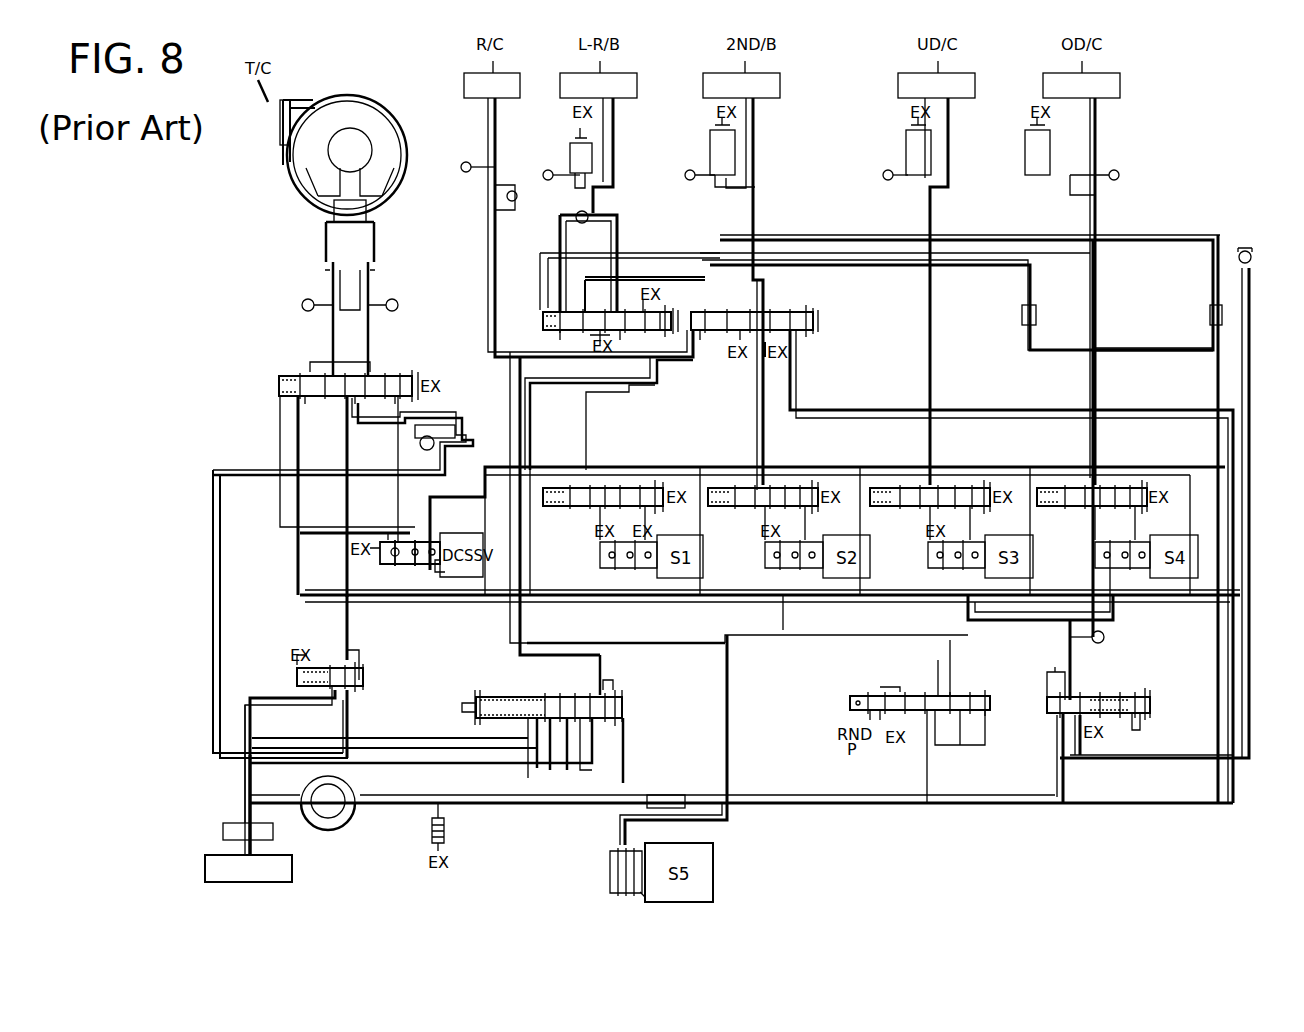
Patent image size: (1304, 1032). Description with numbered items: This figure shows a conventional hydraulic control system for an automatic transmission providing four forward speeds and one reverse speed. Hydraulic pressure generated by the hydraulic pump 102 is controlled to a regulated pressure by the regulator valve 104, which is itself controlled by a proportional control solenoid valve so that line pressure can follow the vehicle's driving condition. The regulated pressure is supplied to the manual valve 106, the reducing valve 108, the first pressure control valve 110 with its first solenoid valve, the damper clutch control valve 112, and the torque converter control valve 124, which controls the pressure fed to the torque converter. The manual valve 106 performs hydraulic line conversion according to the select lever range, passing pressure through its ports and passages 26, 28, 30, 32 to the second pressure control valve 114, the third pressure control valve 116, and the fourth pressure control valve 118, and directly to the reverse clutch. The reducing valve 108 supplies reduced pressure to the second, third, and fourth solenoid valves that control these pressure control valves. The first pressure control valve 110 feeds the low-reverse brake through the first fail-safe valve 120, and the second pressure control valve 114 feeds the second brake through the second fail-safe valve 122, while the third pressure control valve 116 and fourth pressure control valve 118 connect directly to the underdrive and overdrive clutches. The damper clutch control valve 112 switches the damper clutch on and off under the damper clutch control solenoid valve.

The hydraulic pump 102 is at (328, 828).
The regulator valve 104 is at (460, 700).
The manual valve 106 is at (828, 700).
The reducing valve 108 is at (1148, 705).
The first pressure control valve 110 is at (566, 520).
The damper clutch control valve 112 is at (272, 384).
The second pressure control valve 114 is at (733, 520).
The third pressure control valve 116 is at (898, 520).
The fourth pressure control valve 118 is at (1064, 520).
The first fail-safe valve 120 is at (542, 316).
The second fail-safe valve 122 is at (818, 320).
The torque converter control valve 124 is at (290, 672).
The D range pressure line 26 is at (958, 694).
The R range pressure line 28 is at (950, 675).
The manual valve input port 30 is at (881, 691).
The line pressure passage 32 is at (928, 785).